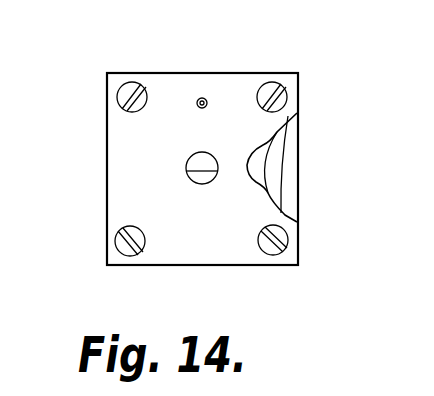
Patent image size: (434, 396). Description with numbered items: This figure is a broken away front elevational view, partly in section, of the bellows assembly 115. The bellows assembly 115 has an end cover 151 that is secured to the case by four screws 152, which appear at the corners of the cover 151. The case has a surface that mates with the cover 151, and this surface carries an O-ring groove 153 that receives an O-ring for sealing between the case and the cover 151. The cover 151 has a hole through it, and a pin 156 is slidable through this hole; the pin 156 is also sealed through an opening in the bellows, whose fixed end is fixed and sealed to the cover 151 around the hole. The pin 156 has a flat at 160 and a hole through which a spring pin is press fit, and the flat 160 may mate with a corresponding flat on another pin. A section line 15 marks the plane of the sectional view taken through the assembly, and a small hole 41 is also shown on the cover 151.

The section line 15 is at (202, 28).
The pin 41 is at (199, 108).
The bellows assembly 115 is at (107, 173).
The end cover 151 is at (121, 211).
The screws 152 is at (119, 90).
The O-ring groove 153 is at (284, 170).
The pin 156 is at (195, 183).
The flat 160 is at (209, 166).